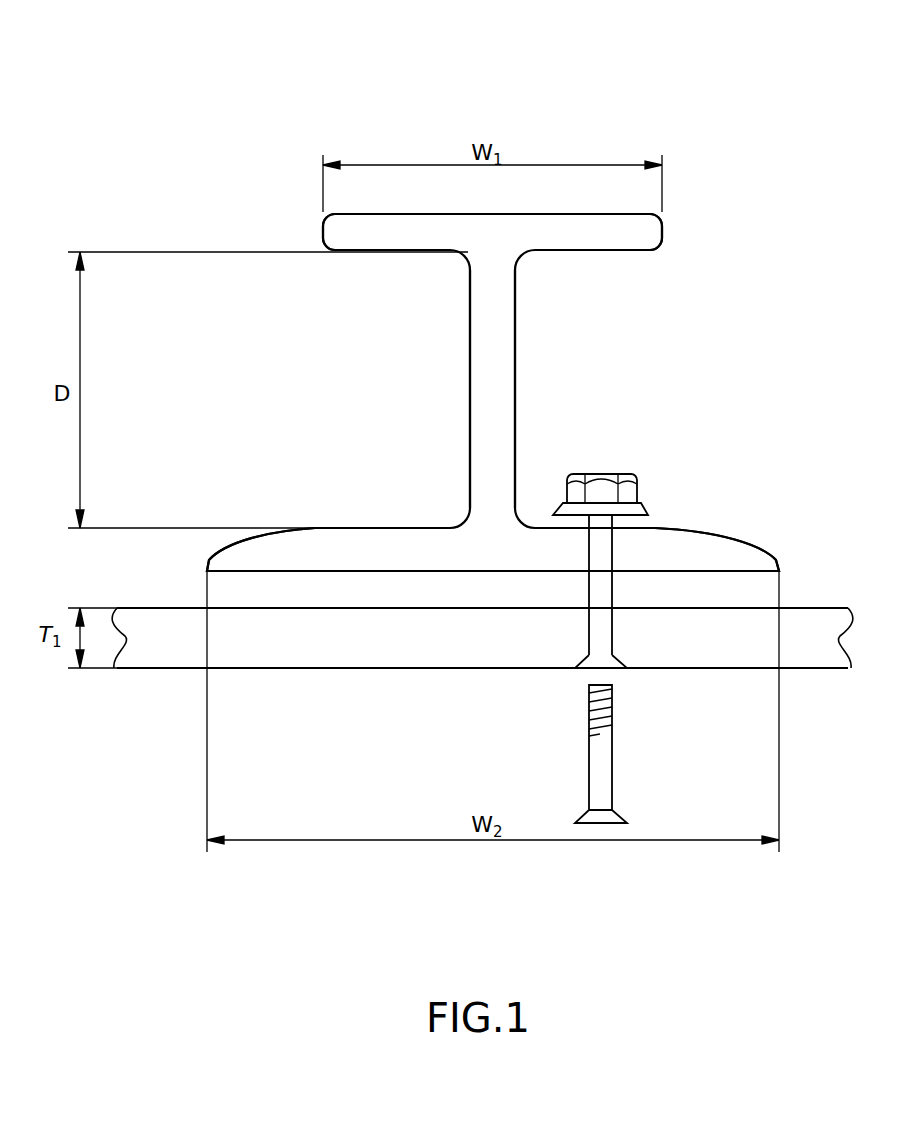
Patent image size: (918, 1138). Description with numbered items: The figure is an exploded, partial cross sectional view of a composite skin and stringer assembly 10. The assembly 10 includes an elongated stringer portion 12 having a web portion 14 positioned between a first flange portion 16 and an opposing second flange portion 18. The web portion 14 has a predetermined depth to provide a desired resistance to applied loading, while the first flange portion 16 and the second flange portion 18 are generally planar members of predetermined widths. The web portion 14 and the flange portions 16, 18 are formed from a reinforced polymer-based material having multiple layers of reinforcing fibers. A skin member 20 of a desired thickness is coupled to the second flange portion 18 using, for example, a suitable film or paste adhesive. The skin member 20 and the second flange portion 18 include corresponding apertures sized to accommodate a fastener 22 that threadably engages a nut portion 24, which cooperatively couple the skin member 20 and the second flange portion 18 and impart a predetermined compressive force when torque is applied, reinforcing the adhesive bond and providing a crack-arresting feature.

The composite skin and stringer assembly 10 is at (660, 80).
The stringer portion 12 is at (600, 356).
The web portion 14 is at (488, 388).
The first flange portion 16 is at (654, 240).
The second flange portion 18 is at (355, 540).
The skin member 20 is at (810, 612).
The fastener 22 is at (604, 767).
The nut portion 24 is at (632, 492).